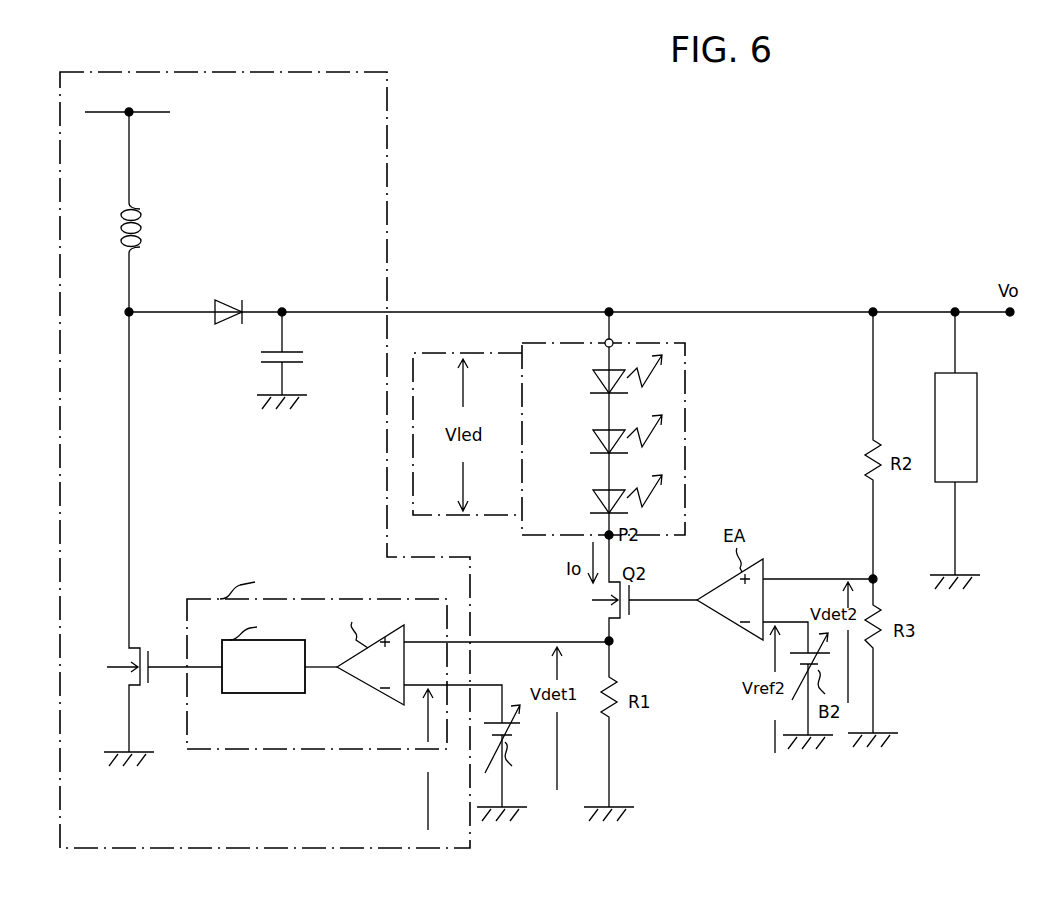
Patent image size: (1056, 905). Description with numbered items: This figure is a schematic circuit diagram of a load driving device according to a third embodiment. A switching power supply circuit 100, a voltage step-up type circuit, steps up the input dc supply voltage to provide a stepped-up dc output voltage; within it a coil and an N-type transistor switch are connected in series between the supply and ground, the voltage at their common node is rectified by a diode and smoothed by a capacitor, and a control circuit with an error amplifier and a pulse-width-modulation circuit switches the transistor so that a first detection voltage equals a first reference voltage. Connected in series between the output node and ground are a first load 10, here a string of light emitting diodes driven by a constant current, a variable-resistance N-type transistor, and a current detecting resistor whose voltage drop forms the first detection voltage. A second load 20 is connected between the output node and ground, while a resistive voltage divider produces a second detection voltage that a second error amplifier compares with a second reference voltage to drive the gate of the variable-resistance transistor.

The switching power supply circuit 100 is at (387, 148).
The first load 10 is at (685, 410).
The second load 20 is at (977, 400).